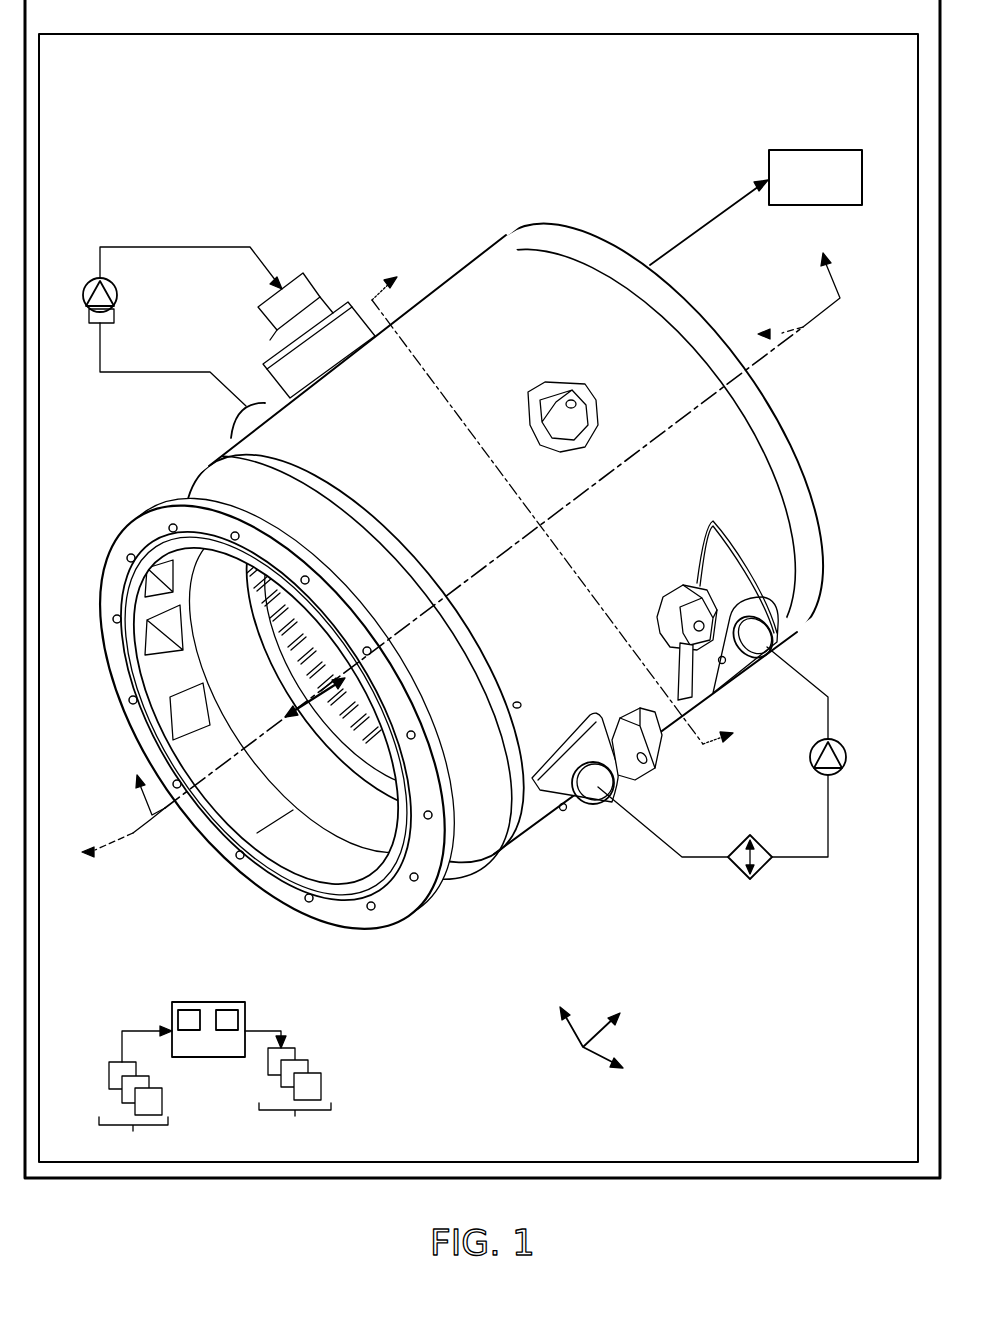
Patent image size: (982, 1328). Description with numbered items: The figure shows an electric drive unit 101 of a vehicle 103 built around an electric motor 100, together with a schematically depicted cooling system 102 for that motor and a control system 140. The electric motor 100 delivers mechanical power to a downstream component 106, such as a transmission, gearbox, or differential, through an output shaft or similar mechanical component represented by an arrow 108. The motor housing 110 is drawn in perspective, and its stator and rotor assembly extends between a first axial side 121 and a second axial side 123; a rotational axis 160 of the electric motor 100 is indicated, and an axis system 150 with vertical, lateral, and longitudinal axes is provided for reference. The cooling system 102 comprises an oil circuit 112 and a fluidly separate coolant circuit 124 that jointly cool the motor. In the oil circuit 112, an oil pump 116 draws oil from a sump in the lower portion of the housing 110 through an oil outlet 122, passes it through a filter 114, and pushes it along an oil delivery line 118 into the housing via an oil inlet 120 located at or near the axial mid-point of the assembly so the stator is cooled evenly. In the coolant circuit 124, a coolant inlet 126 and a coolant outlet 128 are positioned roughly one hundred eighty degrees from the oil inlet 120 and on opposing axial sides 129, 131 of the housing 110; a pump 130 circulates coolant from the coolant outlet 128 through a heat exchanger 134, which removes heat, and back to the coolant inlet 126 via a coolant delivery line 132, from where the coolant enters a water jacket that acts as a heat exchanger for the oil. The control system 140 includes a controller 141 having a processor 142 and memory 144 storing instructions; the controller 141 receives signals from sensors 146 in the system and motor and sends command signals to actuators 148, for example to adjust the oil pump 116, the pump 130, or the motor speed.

The electric motor 100 is at (536, 188).
The electric drive unit 101 is at (104, 98).
The cooling system 102 is at (292, 190).
The vehicle 103 is at (41, 33).
The downstream component 106 is at (800, 135).
The arrow 108 is at (717, 213).
The housing 110 is at (503, 287).
The oil circuit 112 is at (172, 284).
The filter 114 is at (113, 324).
The oil pump 116 is at (118, 296).
The oil delivery line 118 is at (200, 247).
The oil inlet 120 is at (320, 298).
The first axial side 121 is at (228, 677).
The oil outlet 122 is at (238, 430).
The second axial side 123 is at (718, 302).
The coolant circuit 124 is at (751, 811).
The coolant inlet 126 is at (770, 637).
The coolant outlet 128 is at (592, 806).
The axial side 129 is at (758, 550).
The pump 130 is at (847, 760).
The axial side 131 is at (560, 786).
The coolant delivery line 132 is at (829, 706).
The heat exchanger 134 is at (735, 872).
The control system 140 is at (197, 1051).
The controller 141 is at (200, 1002).
The processor 142 is at (174, 1016).
The memory 144 is at (240, 1016).
The sensors 146 is at (133, 1109).
The actuators 148 is at (295, 1095).
The axis system 150 is at (658, 993).
The rotational axis 160 is at (326, 673).